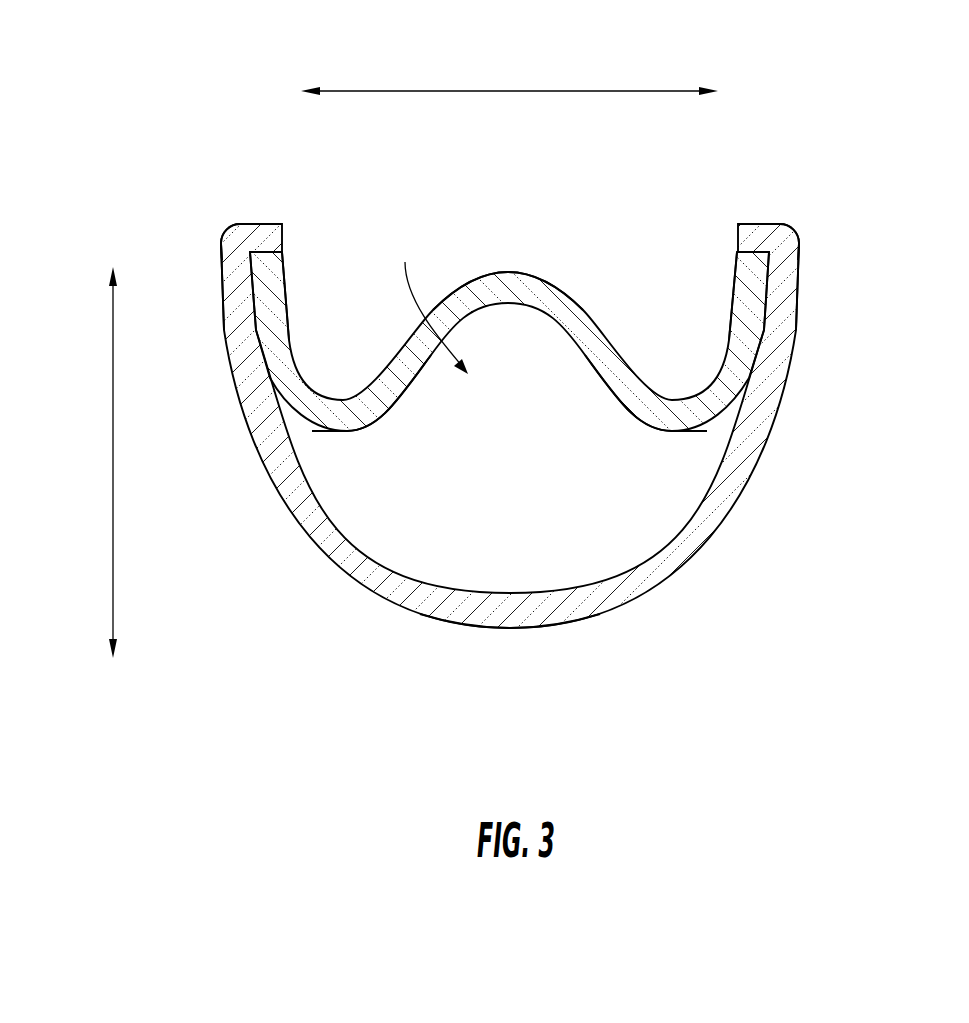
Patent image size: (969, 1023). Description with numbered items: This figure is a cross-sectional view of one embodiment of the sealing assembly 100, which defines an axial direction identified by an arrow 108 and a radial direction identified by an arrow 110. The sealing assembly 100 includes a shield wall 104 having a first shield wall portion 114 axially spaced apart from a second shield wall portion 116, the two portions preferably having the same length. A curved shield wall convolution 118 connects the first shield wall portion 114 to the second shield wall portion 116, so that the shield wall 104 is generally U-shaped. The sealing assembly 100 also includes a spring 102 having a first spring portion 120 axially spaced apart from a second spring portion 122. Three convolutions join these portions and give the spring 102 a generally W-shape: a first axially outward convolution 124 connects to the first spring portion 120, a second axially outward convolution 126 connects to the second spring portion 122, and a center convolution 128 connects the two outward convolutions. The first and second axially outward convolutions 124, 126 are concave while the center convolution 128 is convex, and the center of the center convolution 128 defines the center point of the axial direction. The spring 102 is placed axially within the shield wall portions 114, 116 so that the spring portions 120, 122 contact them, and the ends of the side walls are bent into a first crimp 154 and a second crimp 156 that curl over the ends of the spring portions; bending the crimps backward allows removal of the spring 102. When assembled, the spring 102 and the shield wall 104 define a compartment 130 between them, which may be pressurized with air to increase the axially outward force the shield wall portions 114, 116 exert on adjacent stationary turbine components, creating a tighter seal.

The sealing assembly 100 is at (133, 176).
The spring 102 is at (579, 237).
The shield wall 104 is at (741, 590).
The arrow 108 is at (450, 91).
The arrow 110 is at (113, 446).
The first shield wall portion 114 is at (223, 293).
The second shield wall portion 116 is at (797, 317).
The shield wall convolution 118 is at (450, 629).
The first spring portion 120 is at (288, 300).
The second spring portion 122 is at (737, 270).
The first axially outward convolution 124 is at (367, 432).
The second axially outward convolution 126 is at (664, 432).
The center convolution 128 is at (520, 270).
The compartment 130 is at (429, 299).
The first crimp 154 is at (273, 226).
The second crimp 156 is at (752, 238).